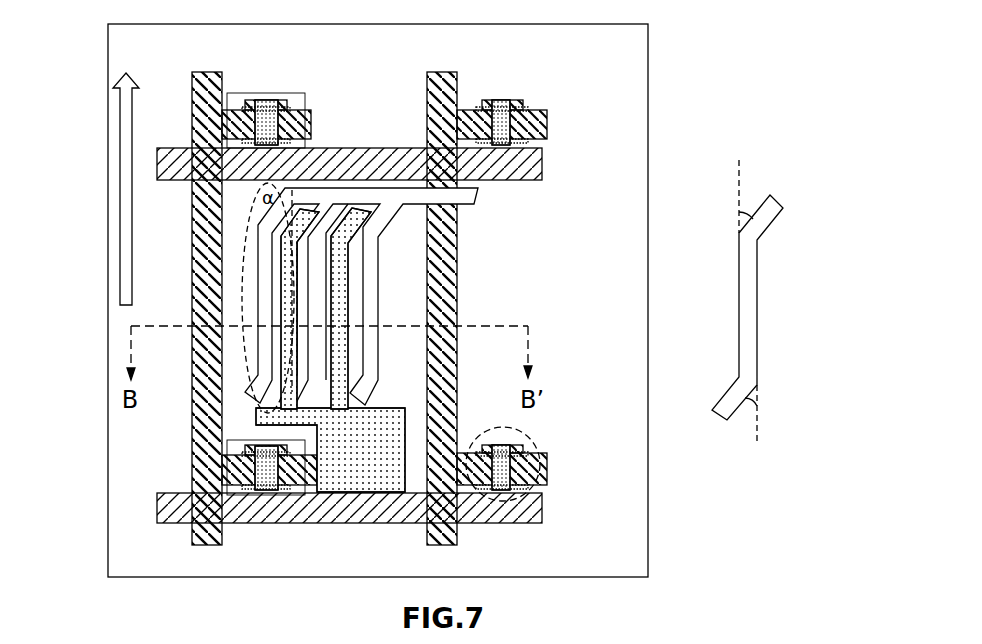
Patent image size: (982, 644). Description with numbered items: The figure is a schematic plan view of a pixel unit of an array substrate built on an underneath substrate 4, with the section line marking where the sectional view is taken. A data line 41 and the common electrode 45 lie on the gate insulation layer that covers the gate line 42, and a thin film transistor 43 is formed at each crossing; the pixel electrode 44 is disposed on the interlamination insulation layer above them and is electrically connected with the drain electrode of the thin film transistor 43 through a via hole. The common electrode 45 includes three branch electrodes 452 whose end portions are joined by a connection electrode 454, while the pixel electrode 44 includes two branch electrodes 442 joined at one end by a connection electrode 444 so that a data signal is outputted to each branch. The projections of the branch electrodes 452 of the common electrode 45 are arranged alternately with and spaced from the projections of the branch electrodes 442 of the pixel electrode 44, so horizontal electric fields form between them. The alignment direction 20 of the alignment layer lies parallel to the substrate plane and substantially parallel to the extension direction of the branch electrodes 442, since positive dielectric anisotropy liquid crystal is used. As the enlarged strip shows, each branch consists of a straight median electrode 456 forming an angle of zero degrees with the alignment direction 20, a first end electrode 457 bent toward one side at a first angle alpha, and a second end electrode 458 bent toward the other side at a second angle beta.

The underneath substrate 4 is at (428, 35).
The alignment direction 20 is at (127, 120).
The data line 41 is at (458, 85).
The data line 42 is at (540, 173).
The thin film transistor 43 is at (538, 447).
The pixel electrode 44 is at (338, 350).
The branch electrode of the pixel electrode 442 is at (342, 257).
The connection electrode of the pixel electrode 444 is at (257, 410).
The common electrode 45 is at (407, 260).
The branch electrode of the common electrode 452 is at (372, 286).
The connection electrode of the common electrode 454 is at (383, 260).
The median electrode 456 is at (762, 301).
The first end electrode 457 is at (762, 301).
The second end electrode 458 is at (735, 398).